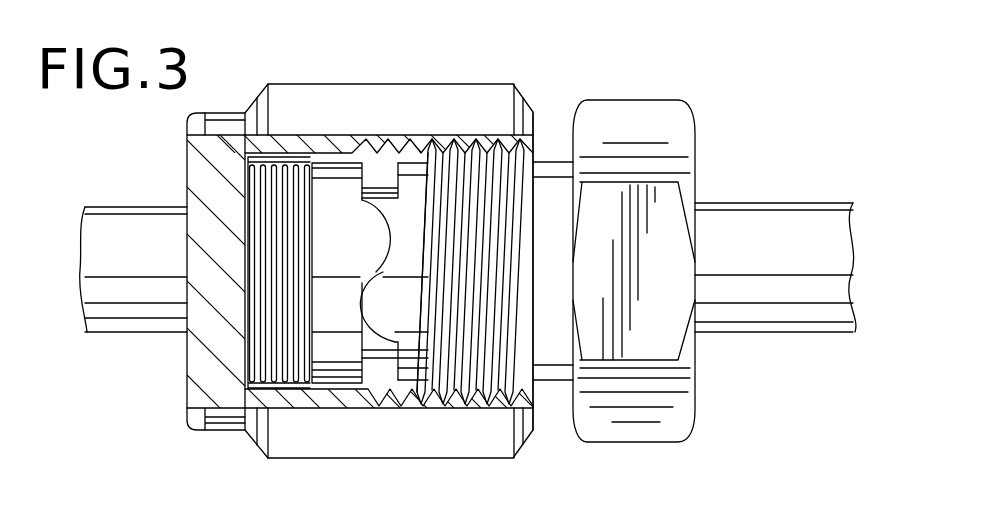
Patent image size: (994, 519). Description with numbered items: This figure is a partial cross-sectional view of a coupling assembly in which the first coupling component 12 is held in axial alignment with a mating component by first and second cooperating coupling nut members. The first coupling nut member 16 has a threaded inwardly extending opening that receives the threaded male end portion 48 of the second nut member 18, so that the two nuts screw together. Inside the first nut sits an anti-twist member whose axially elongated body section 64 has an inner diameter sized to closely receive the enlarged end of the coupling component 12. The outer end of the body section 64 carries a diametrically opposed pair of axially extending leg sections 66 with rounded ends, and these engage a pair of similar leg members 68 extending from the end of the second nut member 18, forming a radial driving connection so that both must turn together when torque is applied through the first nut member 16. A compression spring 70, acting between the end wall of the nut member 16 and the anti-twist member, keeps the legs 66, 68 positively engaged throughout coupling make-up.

The first coupling component 12 is at (158, 191).
The first coupling nut member 16 is at (510, 76).
The second coupling nut member 18 is at (632, 90).
The threaded male end portion 48 is at (465, 402).
The axially elongated body section 64 is at (332, 360).
The axially extending tabs or leg sections 66 is at (368, 232).
The legs or tab members 68 is at (388, 308).
The compression spring 70 is at (290, 166).